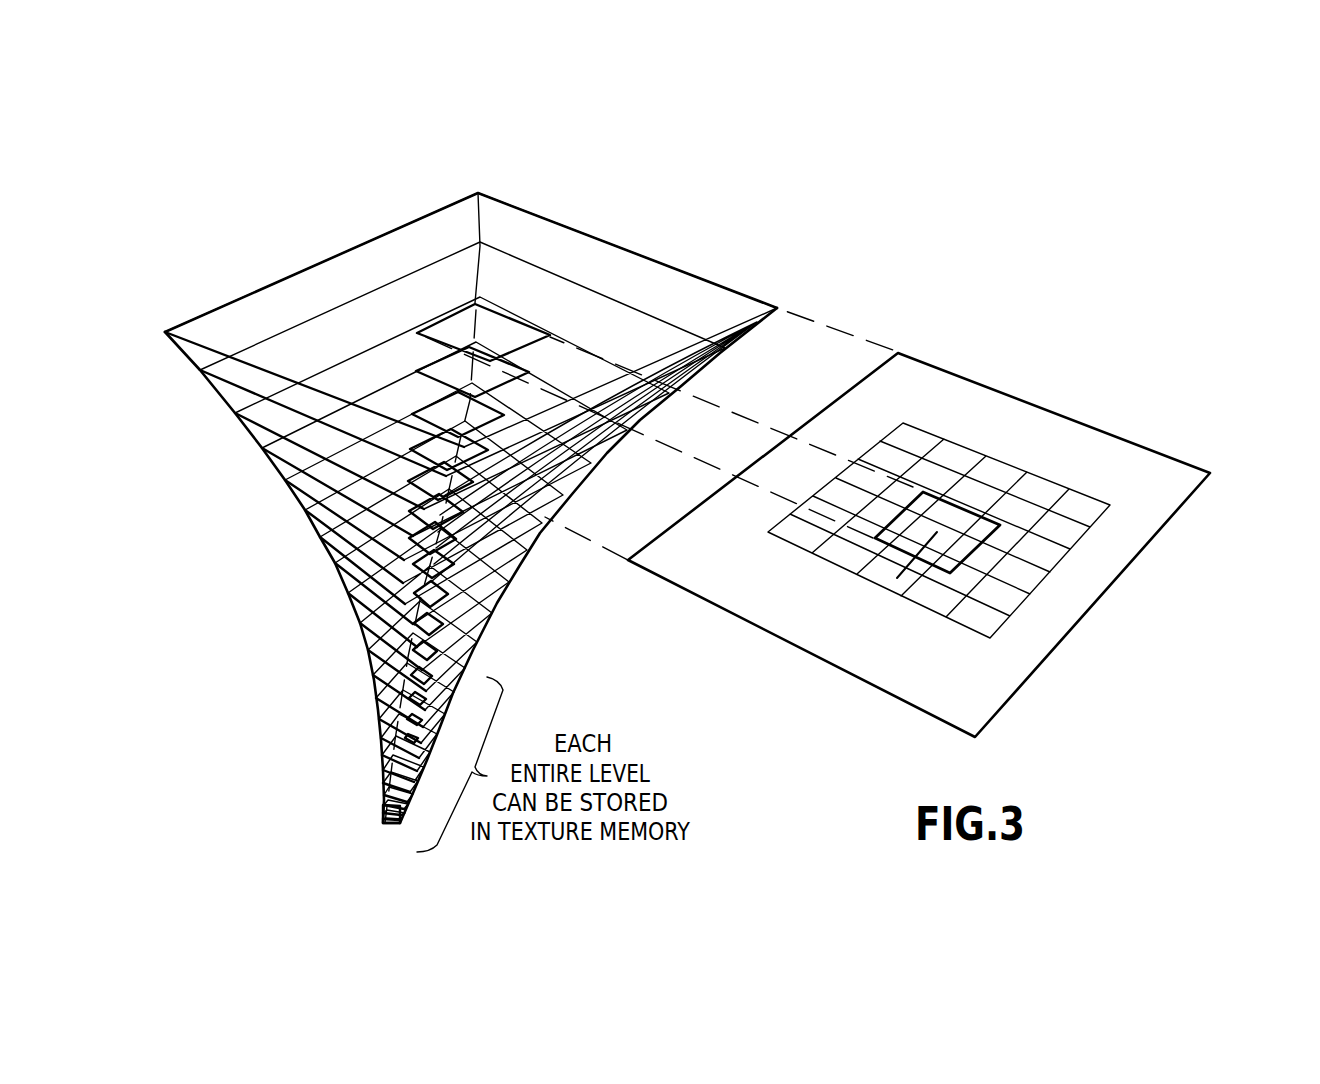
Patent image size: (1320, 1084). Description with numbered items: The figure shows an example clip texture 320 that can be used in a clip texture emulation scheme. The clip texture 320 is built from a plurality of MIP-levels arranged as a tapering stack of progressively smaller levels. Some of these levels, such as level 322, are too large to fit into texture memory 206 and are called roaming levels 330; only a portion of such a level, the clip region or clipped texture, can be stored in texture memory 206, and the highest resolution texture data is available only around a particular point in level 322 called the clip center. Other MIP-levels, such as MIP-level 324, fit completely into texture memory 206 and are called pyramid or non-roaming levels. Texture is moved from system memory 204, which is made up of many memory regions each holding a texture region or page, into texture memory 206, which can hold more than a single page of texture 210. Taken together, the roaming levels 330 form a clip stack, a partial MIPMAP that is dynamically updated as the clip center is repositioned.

The clip texture 320 is at (554, 157).
The level 322 is at (267, 285).
The texture memory 206 is at (455, 315).
The roaming levels 330 is at (482, 337).
The MIP-level 324 is at (380, 742).
The system memory 204 is at (970, 450).
The page of texture 210 is at (897, 578).